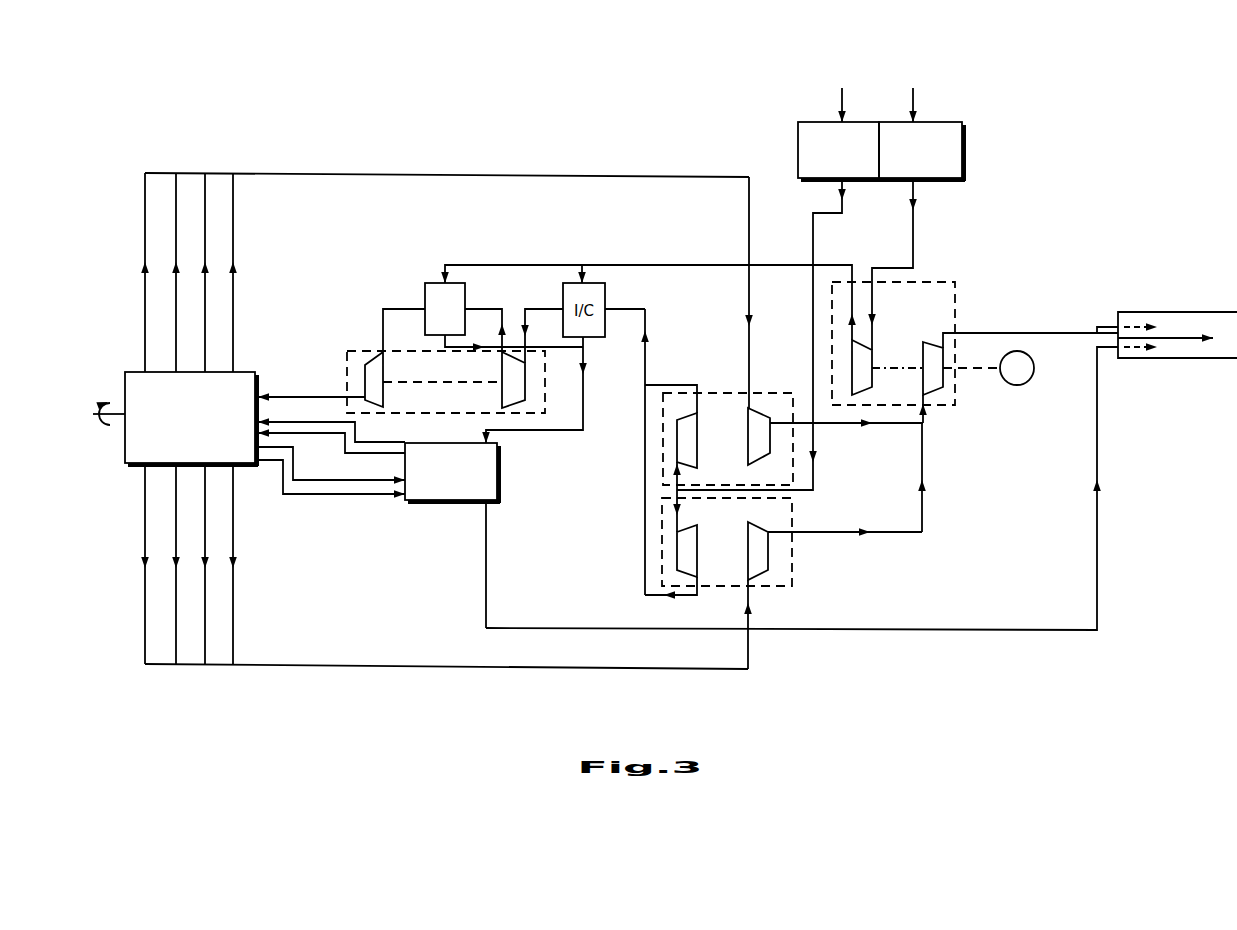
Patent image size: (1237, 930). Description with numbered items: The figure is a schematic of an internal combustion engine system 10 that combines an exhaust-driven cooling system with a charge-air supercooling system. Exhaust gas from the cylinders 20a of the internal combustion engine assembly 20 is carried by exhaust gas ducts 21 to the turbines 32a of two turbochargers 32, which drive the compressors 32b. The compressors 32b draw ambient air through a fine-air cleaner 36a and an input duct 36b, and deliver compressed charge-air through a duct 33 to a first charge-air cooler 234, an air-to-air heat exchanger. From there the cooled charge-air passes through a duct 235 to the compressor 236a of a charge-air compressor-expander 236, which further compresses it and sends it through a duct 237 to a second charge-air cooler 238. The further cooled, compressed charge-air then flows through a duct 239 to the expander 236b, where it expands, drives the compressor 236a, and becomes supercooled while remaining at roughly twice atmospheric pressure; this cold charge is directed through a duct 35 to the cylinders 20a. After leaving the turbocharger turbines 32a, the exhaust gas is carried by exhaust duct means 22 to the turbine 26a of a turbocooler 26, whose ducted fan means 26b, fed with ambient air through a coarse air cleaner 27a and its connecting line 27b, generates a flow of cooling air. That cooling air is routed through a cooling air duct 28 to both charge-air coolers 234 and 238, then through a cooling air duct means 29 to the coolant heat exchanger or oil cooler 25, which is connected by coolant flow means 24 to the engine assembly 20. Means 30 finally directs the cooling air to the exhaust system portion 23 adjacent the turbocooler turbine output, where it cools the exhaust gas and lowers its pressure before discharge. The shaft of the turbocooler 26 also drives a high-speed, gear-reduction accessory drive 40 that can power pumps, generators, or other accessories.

The internal combustion engine system 10 is at (1126, 190).
The internal combustion engine assembly 20 is at (133, 412).
The cylinders 20a is at (148, 378).
The exhaust gas ducts 21 is at (494, 174).
The exhaust duct means 22 is at (905, 424).
The exhaust system portion 23 is at (1124, 326).
The coolant flow means 24 is at (381, 508).
The coolant heat exchanger 25 is at (500, 471).
The turbocooler 26 is at (957, 310).
The turbocooler turbine 26a is at (935, 395).
The ducted fan means 26b is at (866, 393).
The coarse air cleaner 27a is at (967, 143).
The coarse cleaner outlet line 27b is at (913, 246).
The cooling air duct 28 is at (722, 265).
The cooling air duct means 29 is at (588, 430).
The cooling air directing means 30 is at (882, 631).
The turbochargers 32 is at (792, 578).
The turbocharger turbines 32a is at (766, 455).
The turbocharger compressors 32b is at (677, 552).
The charge-air duct 33 is at (650, 320).
The charge-air duct 35 is at (272, 386).
The fine-air cleaner 36a is at (806, 122).
The input duct 36b is at (814, 243).
The accessory drive 40 is at (1033, 373).
The first charge-air cooler 234 is at (612, 308).
The duct 235 is at (562, 306).
The charge-air compressor-expander 236 is at (548, 410).
The compressor 236a is at (512, 410).
The expander 236b is at (383, 401).
The duct 237 is at (470, 306).
The second charge-air cooler 238 is at (440, 272).
The duct 239 is at (383, 318).